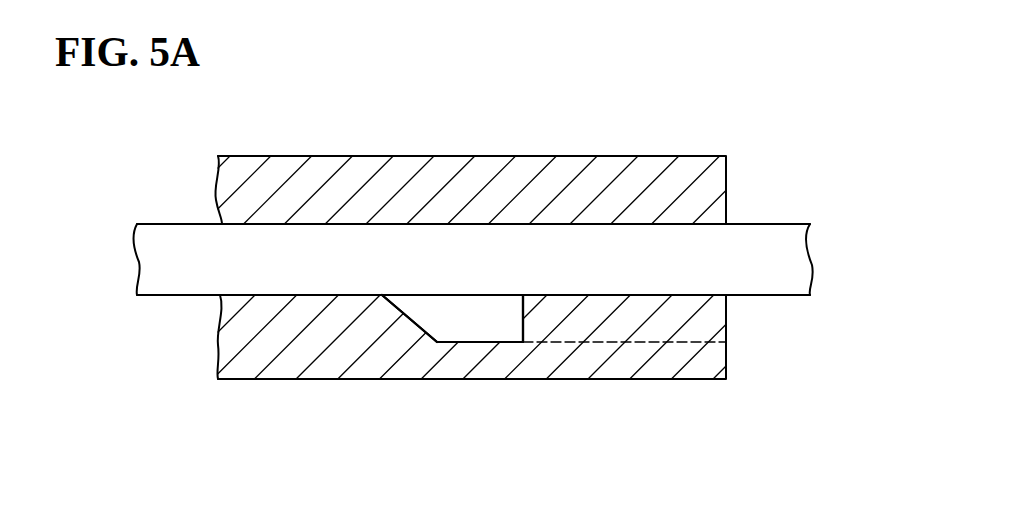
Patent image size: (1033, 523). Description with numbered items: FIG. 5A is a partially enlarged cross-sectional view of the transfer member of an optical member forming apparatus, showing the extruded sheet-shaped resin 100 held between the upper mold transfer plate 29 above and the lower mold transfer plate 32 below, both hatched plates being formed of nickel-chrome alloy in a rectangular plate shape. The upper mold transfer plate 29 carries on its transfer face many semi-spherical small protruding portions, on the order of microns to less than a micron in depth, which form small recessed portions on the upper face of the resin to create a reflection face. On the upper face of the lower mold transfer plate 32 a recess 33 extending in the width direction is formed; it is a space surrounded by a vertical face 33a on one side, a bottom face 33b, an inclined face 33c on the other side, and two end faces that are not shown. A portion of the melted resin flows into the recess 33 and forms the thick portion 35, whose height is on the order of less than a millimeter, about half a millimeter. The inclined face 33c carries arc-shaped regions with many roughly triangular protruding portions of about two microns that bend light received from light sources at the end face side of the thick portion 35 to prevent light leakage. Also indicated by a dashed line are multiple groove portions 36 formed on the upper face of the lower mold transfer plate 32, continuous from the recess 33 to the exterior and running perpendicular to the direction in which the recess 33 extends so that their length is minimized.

The upper mold transfer plate 29 is at (268, 177).
The lower mold transfer plate 32 is at (302, 370).
The sheet-shaped resin 100 is at (167, 290).
The recess 33 is at (477, 394).
The vertical face 33a is at (523, 322).
The bottom face 33b is at (471, 342).
The inclined face 33c is at (413, 320).
The thick portion 35 is at (457, 312).
The groove portions 36 is at (642, 342).